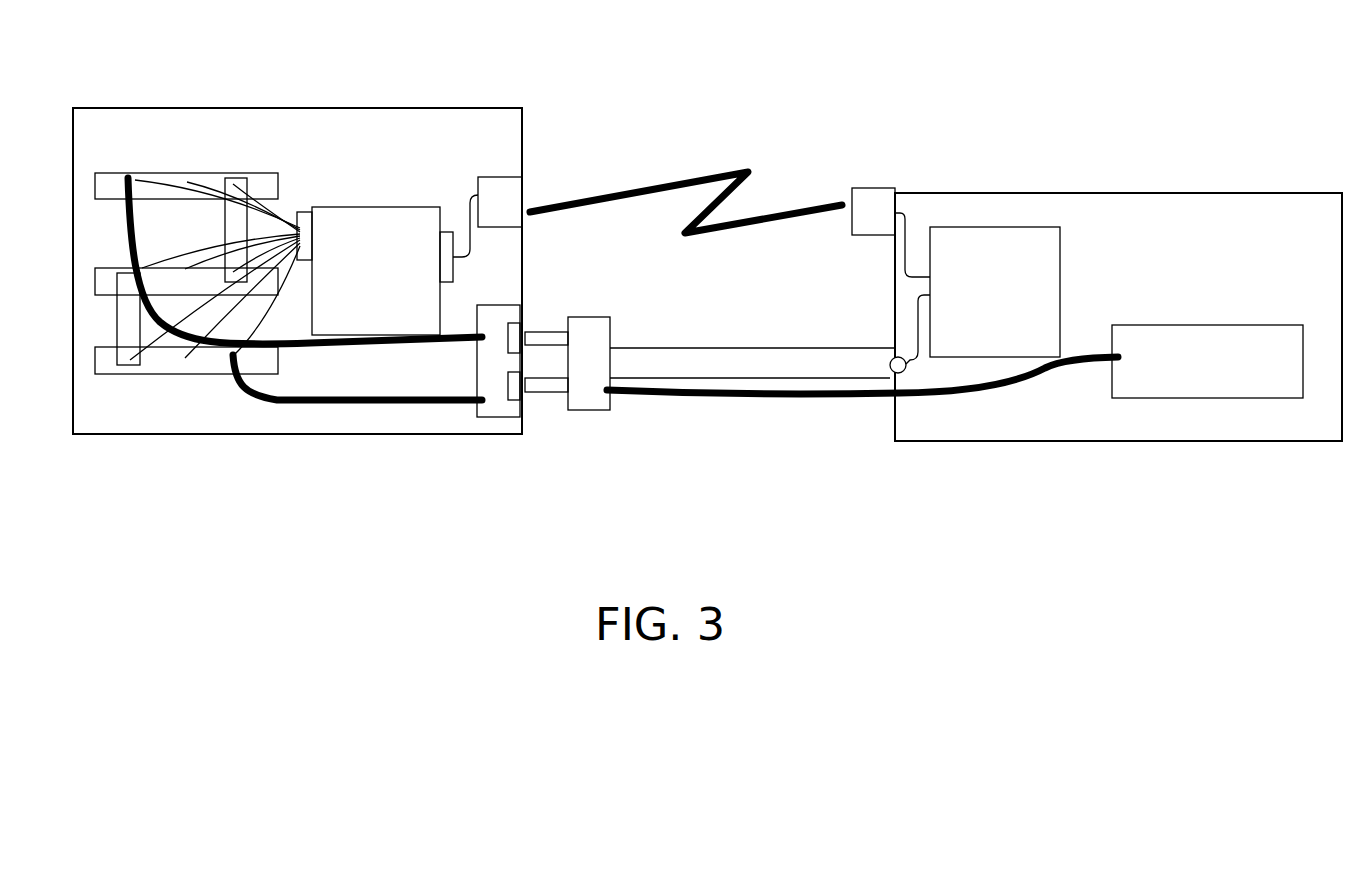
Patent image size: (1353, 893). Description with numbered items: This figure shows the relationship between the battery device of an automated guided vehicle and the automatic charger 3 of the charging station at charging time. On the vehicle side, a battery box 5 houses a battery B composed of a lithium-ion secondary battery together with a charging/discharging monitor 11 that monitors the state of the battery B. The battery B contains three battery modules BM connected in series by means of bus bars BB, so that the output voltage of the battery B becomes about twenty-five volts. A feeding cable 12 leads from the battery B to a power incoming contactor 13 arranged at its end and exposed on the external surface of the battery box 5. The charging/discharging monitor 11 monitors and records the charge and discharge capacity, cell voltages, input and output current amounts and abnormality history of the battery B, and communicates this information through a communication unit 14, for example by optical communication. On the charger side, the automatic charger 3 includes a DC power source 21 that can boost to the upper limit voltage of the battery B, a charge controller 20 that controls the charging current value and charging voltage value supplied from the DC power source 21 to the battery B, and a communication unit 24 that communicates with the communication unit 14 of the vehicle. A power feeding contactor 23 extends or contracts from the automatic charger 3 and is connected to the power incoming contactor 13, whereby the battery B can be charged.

The automatic charger 3 is at (1182, 194).
The battery box 5 is at (462, 108).
The battery B is at (193, 239).
The battery module BM is at (176, 181).
The bus bar BB is at (240, 184).
The charging/discharging monitor 11 is at (360, 273).
The feeding cable 12 is at (318, 348).
The power incoming contactor 13 is at (502, 408).
The communication unit 14 is at (527, 183).
The charge controller 20 is at (980, 296).
The DC power source 21 is at (1200, 343).
The power feeding contactor 23 is at (592, 398).
The communication unit 24 is at (872, 203).